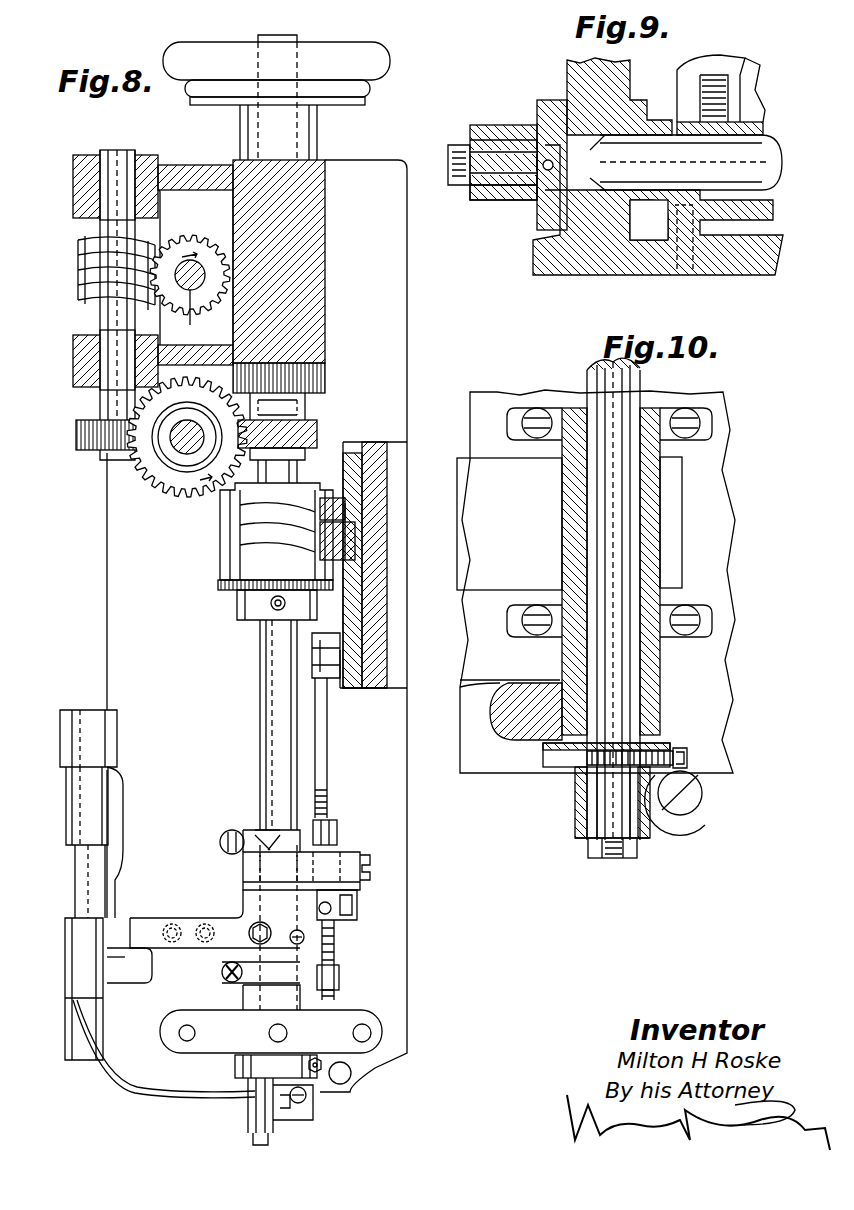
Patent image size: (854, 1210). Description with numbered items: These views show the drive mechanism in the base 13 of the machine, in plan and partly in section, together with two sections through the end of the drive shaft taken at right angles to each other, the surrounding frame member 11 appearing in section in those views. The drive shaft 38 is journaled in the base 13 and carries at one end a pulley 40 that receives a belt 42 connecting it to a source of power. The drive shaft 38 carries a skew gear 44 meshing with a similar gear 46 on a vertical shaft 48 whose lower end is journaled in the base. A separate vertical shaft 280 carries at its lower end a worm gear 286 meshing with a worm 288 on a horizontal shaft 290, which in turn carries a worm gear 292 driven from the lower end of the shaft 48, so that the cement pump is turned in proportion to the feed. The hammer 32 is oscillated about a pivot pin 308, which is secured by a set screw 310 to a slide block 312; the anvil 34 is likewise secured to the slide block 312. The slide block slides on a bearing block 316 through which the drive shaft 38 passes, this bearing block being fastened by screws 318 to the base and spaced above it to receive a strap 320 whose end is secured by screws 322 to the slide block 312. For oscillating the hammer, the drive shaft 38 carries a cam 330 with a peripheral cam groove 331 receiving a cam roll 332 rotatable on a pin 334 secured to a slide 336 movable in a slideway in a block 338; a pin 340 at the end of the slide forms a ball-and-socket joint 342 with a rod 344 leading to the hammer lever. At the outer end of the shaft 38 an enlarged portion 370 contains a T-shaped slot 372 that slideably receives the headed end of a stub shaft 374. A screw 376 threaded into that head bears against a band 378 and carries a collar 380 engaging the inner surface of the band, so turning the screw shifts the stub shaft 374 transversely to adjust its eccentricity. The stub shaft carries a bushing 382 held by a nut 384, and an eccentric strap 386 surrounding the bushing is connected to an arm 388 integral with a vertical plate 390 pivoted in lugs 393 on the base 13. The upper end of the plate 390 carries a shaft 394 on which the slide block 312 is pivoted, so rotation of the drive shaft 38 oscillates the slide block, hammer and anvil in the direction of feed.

In FIG. 8, the bracket / frame member 11 is at (335, 1018).
In FIG. 9, the bracket / frame member 11 is at (615, 75).
In FIG. 10, the bracket / frame member 11 is at (538, 695).
In FIG. 8, the base 13 is at (405, 1050).
In FIG. 9, the base 13 is at (560, 268).
In FIG. 8, the hammer 32 is at (340, 928).
In FIG. 8, the anvil 34 is at (345, 912).
In FIG. 8, the drive shaft 38 is at (262, 710).
In FIG. 9, the drive shaft 38 is at (748, 168).
In FIG. 10, the drive shaft 38 is at (630, 663).
In FIG. 8, the pulley 40 is at (238, 58).
In FIG. 8, the belt 42 is at (370, 90).
In FIG. 8, the skew gear 44 is at (317, 428).
In FIG. 8, the skew gear 46 is at (185, 496).
In FIG. 8, the vertical shaft 48 is at (180, 450).
In FIG. 8, the vertical shaft 280 is at (194, 316).
In FIG. 8, the worm gear 286 is at (200, 258).
In FIG. 8, the worm 288 is at (82, 258).
In FIG. 8, the horizontal shaft 290 is at (118, 150).
In FIG. 8, the worm gear 292 is at (85, 450).
In FIG. 8, the pivot pin 308 is at (335, 860).
In FIG. 8, the set screw 310 is at (262, 845).
In FIG. 8, the slide block 312 is at (222, 918).
In FIG. 8, the bearing block 316 is at (240, 838).
In FIG. 9, the bearing block 316 is at (758, 128).
In FIG. 10, the bearing block 316 is at (567, 508).
In FIG. 8, the screws 318 is at (215, 975).
In FIG. 10, the screws 318 is at (535, 408).
In FIG. 10, the strap 320 is at (682, 500).
In FIG. 8, the screws 322 is at (172, 920).
In FIG. 8, the cam 330 is at (220, 568).
In FIG. 8, the peripheral cam groove 331 is at (240, 538).
In FIG. 8, the cam roll 332 is at (330, 498).
In FIG. 8, the pin 334 is at (355, 530).
In FIG. 8, the slide 336 is at (362, 598).
In FIG. 8, the block 338 is at (380, 688).
In FIG. 8, the pin 340 is at (350, 688).
In FIG. 8, the ball-and-socket joint 342 is at (312, 660).
In FIG. 8, the rod 344 is at (327, 752).
In FIG. 8, the enlarged portion 370 is at (235, 1068).
In FIG. 9, the enlarged portion 370 is at (548, 105).
In FIG. 10, the enlarged portion 370 is at (565, 765).
In FIG. 9, the T-shaped slot 372 is at (550, 185).
In FIG. 9, the stub shaft 374 is at (503, 125).
In FIG. 10, the stub shaft 374 is at (640, 842).
In FIG. 10, the screw 376 is at (680, 762).
In FIG. 8, the band 378 is at (320, 1072).
In FIG. 10, the band 378 is at (680, 748).
In FIG. 10, the collar 380 is at (700, 815).
In FIG. 9, the bushing 382 is at (478, 135).
In FIG. 10, the bushing 382 is at (590, 845).
In FIG. 9, the nut 384 is at (448, 158).
In FIG. 10, the nut 384 is at (625, 855).
In FIG. 8, the eccentric strap 386 is at (300, 1118).
In FIG. 9, the eccentric strap 386 is at (485, 200).
In FIG. 10, the eccentric strap 386 is at (575, 800).
In FIG. 8, the arm 388 is at (140, 1100).
In FIG. 8, the vertical plate 390 is at (115, 975).
In FIG. 8, the lugs 393 is at (70, 700).
In FIG. 8, the shaft 394 is at (120, 860).